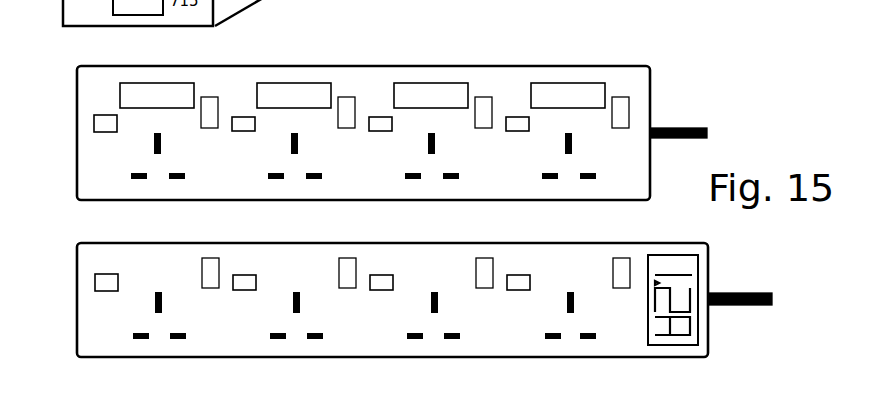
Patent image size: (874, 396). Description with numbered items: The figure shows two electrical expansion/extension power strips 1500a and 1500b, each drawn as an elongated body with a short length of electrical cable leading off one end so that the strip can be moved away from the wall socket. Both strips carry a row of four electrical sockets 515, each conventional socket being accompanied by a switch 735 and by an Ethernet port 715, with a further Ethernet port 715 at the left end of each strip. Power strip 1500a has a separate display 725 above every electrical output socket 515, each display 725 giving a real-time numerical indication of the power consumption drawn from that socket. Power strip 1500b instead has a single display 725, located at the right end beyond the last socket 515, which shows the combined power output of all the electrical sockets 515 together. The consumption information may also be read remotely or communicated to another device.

The electrical socket 515 is at (374, 236).
The Ethernet port 715 is at (94, 125).
The display 725 is at (557, 90).
The switch 735 is at (413, 185).
The power strip 1500a is at (407, 133).
The power strip 1500b is at (436, 300).